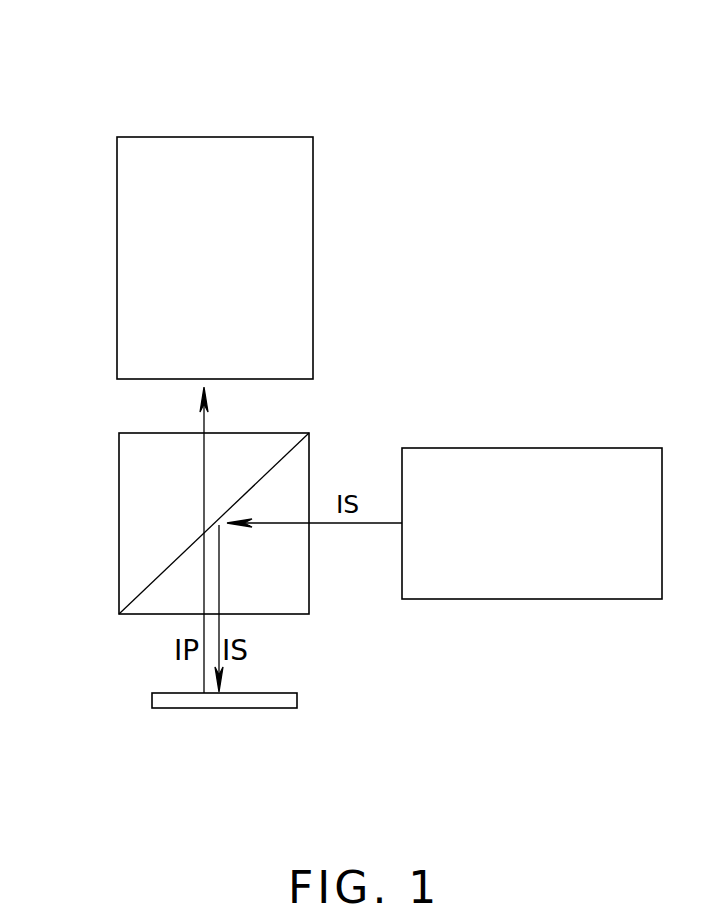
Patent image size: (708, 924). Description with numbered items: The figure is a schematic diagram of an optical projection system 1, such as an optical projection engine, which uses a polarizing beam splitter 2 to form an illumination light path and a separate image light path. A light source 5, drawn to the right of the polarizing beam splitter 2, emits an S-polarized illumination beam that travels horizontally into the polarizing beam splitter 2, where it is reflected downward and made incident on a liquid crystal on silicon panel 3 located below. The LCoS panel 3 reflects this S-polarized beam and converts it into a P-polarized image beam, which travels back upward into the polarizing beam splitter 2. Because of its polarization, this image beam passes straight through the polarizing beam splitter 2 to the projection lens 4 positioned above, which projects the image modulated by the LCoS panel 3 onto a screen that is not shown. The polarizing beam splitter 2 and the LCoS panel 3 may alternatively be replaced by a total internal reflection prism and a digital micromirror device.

The optical projection system 1 is at (66, 42).
The polarizing beam splitter 2 is at (119, 522).
The liquid crystal on silicon panel 3 is at (297, 697).
The projection lens 4 is at (313, 247).
The light source 5 is at (515, 448).